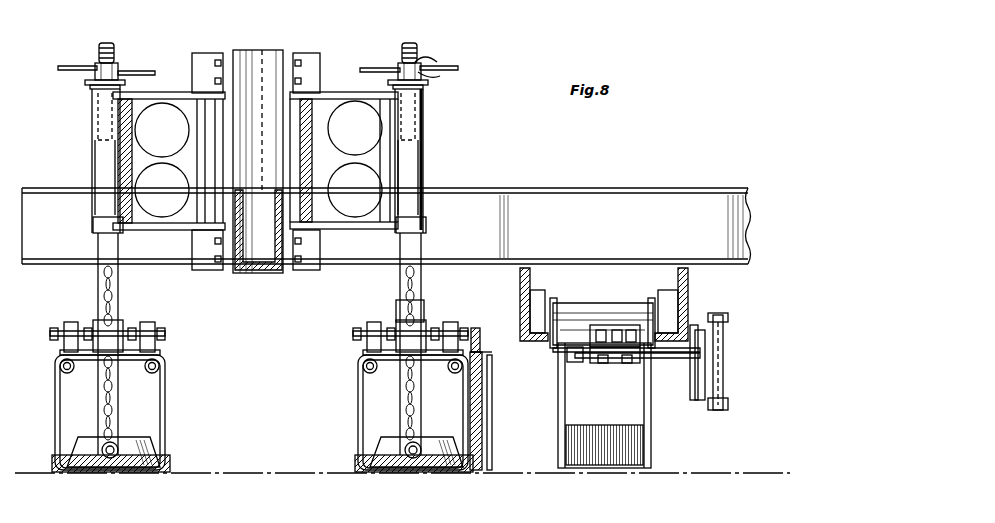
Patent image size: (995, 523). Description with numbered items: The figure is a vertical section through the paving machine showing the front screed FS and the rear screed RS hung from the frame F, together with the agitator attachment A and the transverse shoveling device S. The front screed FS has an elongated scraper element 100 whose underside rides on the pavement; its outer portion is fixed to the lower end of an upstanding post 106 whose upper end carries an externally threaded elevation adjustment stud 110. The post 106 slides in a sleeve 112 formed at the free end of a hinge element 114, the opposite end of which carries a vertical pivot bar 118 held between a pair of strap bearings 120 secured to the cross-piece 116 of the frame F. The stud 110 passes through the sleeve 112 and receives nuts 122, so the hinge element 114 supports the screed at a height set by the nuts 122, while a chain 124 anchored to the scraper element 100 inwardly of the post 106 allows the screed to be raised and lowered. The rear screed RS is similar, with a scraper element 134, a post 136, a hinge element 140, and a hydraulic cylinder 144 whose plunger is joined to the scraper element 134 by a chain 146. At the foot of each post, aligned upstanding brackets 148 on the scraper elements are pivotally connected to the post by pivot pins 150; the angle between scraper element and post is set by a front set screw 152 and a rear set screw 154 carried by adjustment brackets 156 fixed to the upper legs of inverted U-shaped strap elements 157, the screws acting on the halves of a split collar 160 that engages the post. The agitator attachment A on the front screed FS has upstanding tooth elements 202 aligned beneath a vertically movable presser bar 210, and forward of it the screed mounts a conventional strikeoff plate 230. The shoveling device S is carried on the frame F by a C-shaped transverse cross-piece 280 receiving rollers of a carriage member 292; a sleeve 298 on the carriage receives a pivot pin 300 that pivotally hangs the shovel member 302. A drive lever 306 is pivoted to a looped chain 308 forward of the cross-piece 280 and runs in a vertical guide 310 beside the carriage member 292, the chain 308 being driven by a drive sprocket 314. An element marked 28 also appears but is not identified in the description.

The frame F is at (534, 198).
The jack column 28 is at (423, 166).
The scraper element 100 is at (368, 470).
The upstanding post 106 is at (420, 296).
The elevation adjustment stud 110 is at (420, 45).
The sleeve 112 is at (424, 99).
The hinge element 114 is at (317, 92).
The cross-piece 116 is at (268, 276).
The vertical pivot bar 118 is at (302, 56).
The strap bearings 120 is at (297, 48).
The nuts 122 is at (427, 75).
The chain 124 is at (427, 308).
The scraper element 134 is at (120, 472).
The post 136 is at (118, 299).
The hinge element 140 is at (151, 94).
The hydraulic cylinder 144 is at (91, 166).
The chain 146 is at (100, 304).
The upstanding brackets 148 is at (166, 445).
The pivot pins 150 is at (88, 466).
The front set screw 152 is at (165, 328).
The rear set screw 154 is at (50, 335).
The adjustment brackets 156 is at (64, 348).
The strap elements 157 is at (164, 366).
The split collar 160 is at (474, 328).
The tooth elements 202 is at (482, 362).
The presser bar 210 is at (482, 342).
The strikeoff plate 230 is at (488, 433).
The transverse cross-piece 280 is at (684, 293).
The carriage member 292 is at (577, 318).
The sleeve 298 is at (582, 362).
The pivot pin 300 is at (618, 364).
The shovel member 302 is at (652, 439).
The drive lever 306 is at (712, 412).
The looped chain 308 is at (730, 318).
The guide 310 is at (698, 400).
The drive sprocket 314 is at (723, 360).
The rear screed RS is at (148, 416).
The front screed FS is at (394, 402).
The agitator attachment A is at (476, 406).
The transverse shoveling device S is at (558, 398).